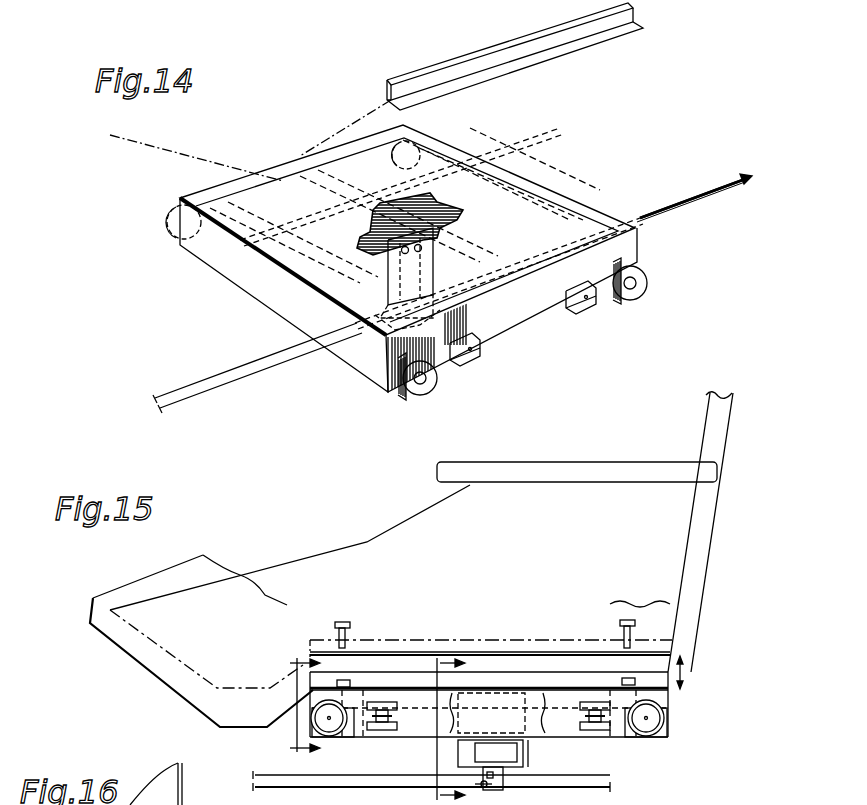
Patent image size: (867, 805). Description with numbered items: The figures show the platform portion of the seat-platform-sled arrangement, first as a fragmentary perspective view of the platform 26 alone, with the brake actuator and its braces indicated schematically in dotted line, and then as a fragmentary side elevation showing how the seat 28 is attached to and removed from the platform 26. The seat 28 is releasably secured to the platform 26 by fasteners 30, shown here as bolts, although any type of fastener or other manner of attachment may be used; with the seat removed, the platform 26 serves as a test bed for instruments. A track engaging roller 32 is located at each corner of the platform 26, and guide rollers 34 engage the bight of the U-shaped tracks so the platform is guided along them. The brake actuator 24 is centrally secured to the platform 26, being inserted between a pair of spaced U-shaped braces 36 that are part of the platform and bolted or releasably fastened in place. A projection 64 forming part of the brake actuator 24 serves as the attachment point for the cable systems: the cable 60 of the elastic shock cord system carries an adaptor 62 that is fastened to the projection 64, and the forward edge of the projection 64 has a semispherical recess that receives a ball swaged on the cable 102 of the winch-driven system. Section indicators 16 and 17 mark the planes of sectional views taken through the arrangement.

In FIG. 15, the section line 16-16 / transfer cart 16 is at (723, 606).
In FIG. 15, the section line 17- 17 is at (435, 729).
In FIG. 14, the brake actuator 24 is at (438, 275).
In FIG. 15, the brake actuator 24 is at (528, 757).
In FIG. 14, the platform 26 is at (366, 366).
In FIG. 15, the seat 28 is at (698, 548).
In FIG. 16, the seat 28 is at (186, 792).
In FIG. 15, the fasteners 30 is at (348, 636).
In FIG. 14, the track engaging roller 32 is at (182, 212).
In FIG. 15, the track engaging roller 32 is at (332, 732).
In FIG. 14, the guide rollers 34 is at (478, 355).
In FIG. 15, the guide rollers 34 is at (390, 716).
In FIG. 14, the U-shaped braces 36 is at (416, 225).
In FIG. 14, the cable 60 is at (218, 372).
In FIG. 15, the cable 60 is at (292, 775).
In FIG. 15, the adaptor 62 is at (482, 778).
In FIG. 15, the projection 64 is at (503, 788).
In FIG. 14, the cable 102 is at (206, 392).
In FIG. 15, the cable 102 is at (338, 788).